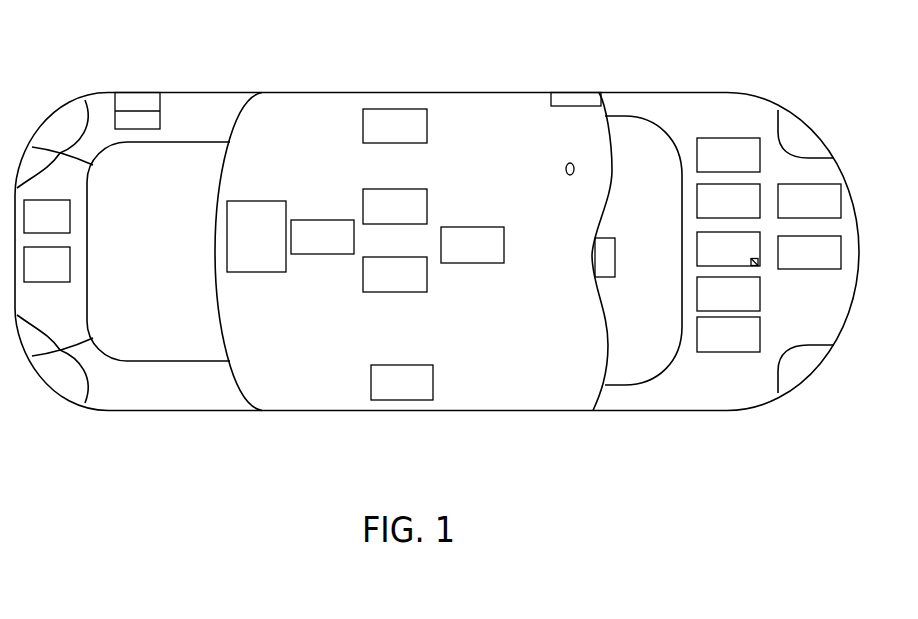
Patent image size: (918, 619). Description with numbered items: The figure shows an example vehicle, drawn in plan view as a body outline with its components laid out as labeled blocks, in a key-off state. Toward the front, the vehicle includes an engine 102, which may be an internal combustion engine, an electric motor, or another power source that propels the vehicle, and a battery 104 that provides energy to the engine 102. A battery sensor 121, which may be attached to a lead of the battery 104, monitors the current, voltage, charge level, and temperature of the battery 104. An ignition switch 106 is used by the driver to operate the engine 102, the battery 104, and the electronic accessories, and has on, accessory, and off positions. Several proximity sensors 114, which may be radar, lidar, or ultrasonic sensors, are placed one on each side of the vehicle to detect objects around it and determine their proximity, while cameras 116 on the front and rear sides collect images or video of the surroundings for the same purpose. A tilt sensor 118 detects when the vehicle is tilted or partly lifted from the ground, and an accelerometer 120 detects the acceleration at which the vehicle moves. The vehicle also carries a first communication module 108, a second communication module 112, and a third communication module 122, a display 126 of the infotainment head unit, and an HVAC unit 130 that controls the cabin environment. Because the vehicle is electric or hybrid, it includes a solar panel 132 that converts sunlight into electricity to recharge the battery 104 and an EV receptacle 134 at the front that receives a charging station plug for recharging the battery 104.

The engine 102 is at (748, 212).
The battery 104 is at (748, 260).
The ignition switch 106 is at (565, 169).
The communication module 108 is at (415, 218).
The communication module 112 is at (415, 286).
The proximity sensors 114 is at (67, 228).
The cameras 116 is at (67, 276).
The tilt sensor 118 is at (342, 248).
The accelerometer 120 is at (492, 256).
The battery sensor 121 is at (758, 266).
The communication module 122 is at (748, 305).
The display 126 is at (575, 100).
The HVAC unit 130 is at (748, 346).
The solar panel 132 is at (276, 248).
The EV receptacle 134 is at (142, 73).